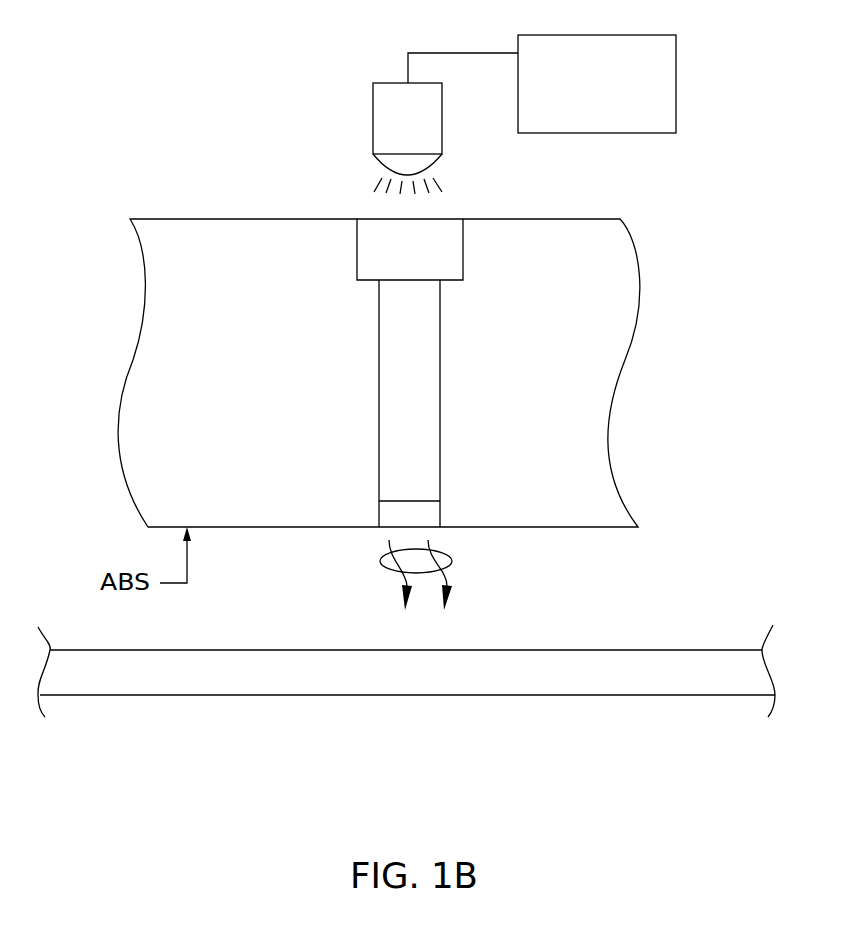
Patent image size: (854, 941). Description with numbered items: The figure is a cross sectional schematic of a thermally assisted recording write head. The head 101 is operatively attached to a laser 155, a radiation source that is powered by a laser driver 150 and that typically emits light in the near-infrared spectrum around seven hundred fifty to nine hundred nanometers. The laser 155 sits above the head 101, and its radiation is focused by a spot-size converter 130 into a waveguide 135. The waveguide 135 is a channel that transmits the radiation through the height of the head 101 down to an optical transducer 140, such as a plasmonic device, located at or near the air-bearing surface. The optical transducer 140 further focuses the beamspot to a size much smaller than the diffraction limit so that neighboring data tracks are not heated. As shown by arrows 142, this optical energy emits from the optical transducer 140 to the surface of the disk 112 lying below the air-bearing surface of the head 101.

The head 101 is at (186, 168).
The disk 112 is at (200, 695).
The spot-size converter 130 is at (357, 243).
The waveguide 135 is at (379, 352).
The optical transducer 140 is at (379, 517).
The arrows 142 is at (382, 561).
The laser driver 150 is at (676, 87).
The laser 155 is at (373, 108).